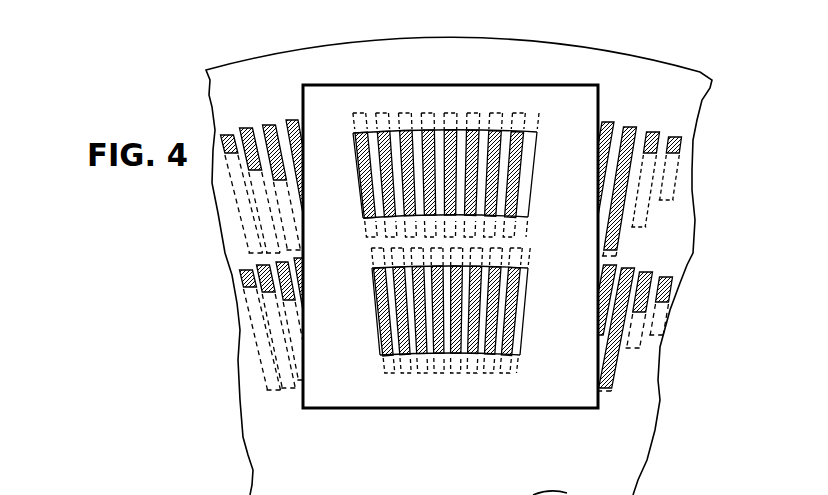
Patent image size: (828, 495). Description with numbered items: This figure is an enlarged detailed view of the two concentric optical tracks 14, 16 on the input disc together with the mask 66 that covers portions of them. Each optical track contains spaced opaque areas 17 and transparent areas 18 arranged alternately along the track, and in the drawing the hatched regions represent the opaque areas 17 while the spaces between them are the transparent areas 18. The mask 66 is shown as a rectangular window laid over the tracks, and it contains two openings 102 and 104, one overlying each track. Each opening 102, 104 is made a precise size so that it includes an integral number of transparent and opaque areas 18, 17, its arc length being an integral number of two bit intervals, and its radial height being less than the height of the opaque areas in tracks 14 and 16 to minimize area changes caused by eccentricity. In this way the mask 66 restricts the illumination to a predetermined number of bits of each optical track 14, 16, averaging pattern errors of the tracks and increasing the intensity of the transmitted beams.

The optical track 14 is at (233, 207).
The optical track 16 is at (253, 352).
The opaque areas 17 is at (362, 181).
The transparent areas 18 is at (373, 143).
The mask 66 is at (562, 393).
The opening 102 is at (533, 176).
The opening 104 is at (527, 313).